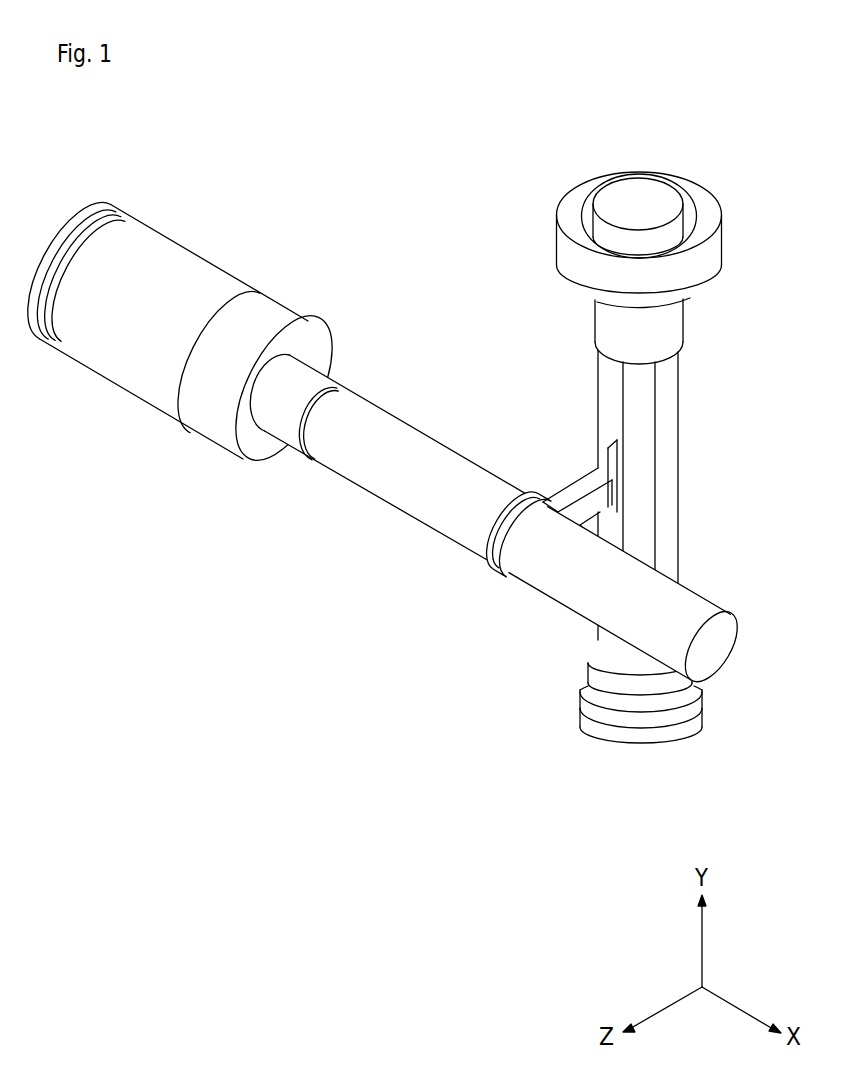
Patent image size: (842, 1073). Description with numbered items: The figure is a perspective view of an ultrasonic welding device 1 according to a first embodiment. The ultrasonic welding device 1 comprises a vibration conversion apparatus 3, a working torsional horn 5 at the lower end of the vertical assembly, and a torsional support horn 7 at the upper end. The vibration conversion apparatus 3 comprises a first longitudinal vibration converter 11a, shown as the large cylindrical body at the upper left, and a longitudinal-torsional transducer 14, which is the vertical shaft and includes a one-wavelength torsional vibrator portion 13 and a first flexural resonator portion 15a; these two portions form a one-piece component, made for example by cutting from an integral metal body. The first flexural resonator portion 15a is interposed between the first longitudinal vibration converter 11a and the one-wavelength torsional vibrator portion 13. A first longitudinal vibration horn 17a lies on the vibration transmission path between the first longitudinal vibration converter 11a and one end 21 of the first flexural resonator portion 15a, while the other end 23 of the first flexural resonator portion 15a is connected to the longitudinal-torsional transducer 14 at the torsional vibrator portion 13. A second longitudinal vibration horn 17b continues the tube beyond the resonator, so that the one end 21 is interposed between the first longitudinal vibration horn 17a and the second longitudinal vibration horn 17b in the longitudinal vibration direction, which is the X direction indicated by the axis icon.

The ultrasonic welding device 1 is at (339, 198).
The vibration conversion apparatus 3 is at (637, 487).
The working torsional horn 5 is at (668, 742).
The torsional support horn 7 is at (640, 190).
The first longitudinal vibration converter 11a is at (128, 362).
The one-wavelength torsional vibrator portion 13 is at (668, 485).
The longitudinal-torsional transducer 14 is at (681, 408).
The first flexural resonator portion 15a is at (570, 483).
The first longitudinal vibration horn 17a is at (385, 478).
The second longitudinal vibration horn 17b is at (600, 610).
The one end of the first flexural resonator portion 21 is at (490, 525).
The other end of the first flexural resonator portion 23 is at (546, 457).